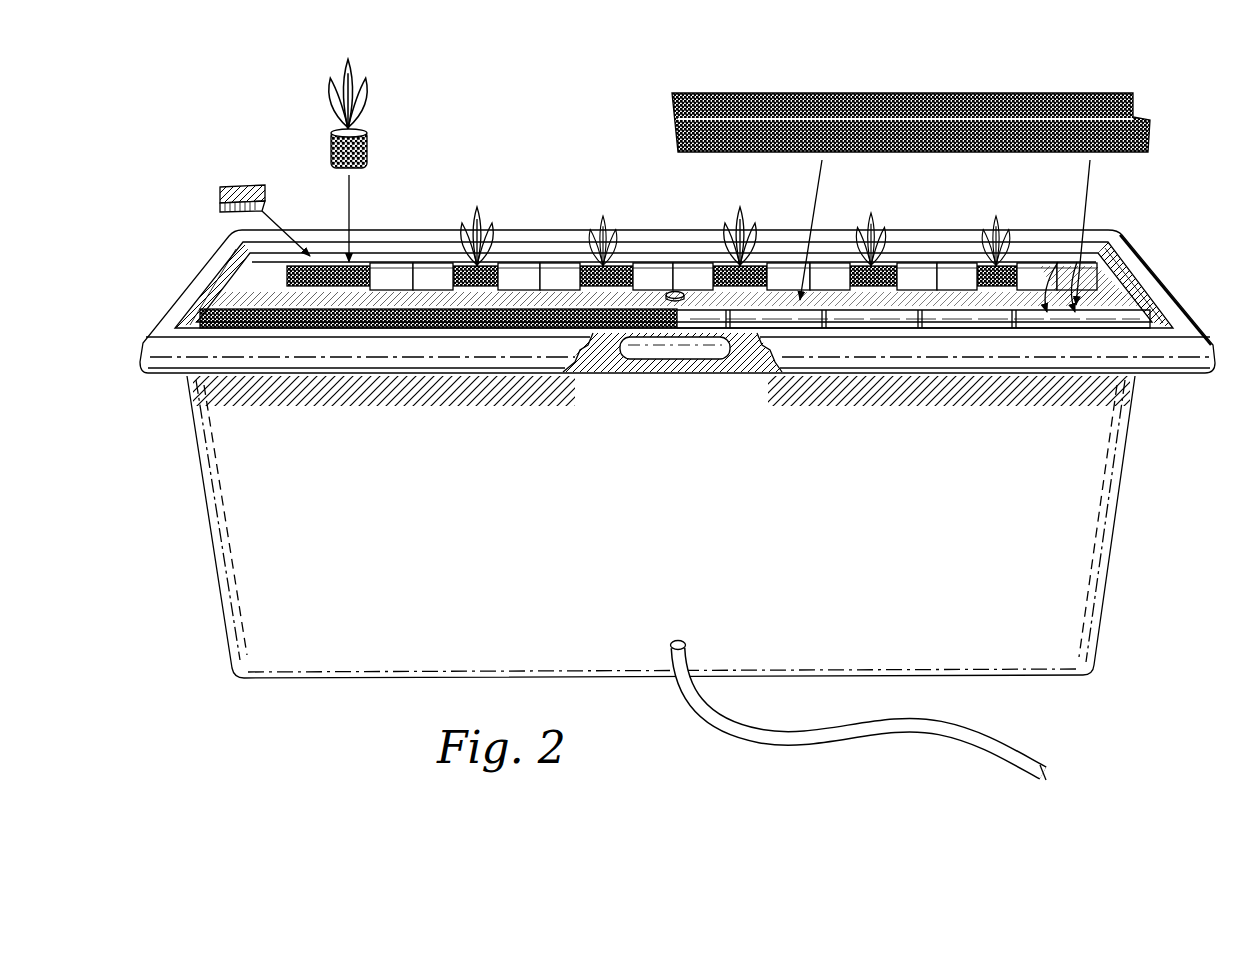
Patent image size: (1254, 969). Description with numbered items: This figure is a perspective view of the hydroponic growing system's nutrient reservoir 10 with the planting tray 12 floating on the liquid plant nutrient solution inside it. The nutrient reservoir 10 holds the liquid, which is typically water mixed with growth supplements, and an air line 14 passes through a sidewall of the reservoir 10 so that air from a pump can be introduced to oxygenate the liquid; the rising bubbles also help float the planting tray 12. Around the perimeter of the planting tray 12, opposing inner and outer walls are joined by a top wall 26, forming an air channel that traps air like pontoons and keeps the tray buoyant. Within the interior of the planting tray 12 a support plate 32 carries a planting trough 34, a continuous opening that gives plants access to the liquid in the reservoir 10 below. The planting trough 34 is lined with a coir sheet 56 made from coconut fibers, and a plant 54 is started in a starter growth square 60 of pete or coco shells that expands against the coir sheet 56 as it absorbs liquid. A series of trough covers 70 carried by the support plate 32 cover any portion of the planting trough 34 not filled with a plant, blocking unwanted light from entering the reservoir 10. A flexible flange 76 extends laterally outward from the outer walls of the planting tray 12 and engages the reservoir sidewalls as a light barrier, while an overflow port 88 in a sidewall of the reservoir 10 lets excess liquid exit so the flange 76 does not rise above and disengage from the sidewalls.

The nutrient reservoir 10 is at (240, 500).
The planting tray 12 is at (1113, 252).
The air line 14 is at (859, 732).
The top wall 26 is at (226, 292).
The support plate 32 is at (654, 294).
The planting trough 34 is at (1103, 286).
The plant 54 is at (351, 58).
The coir sheet 56 is at (936, 90).
The starter growth square 60 is at (370, 147).
The trough cover 70 is at (244, 192).
The flexible flange 76 is at (1157, 318).
The overflow port 88 is at (670, 360).